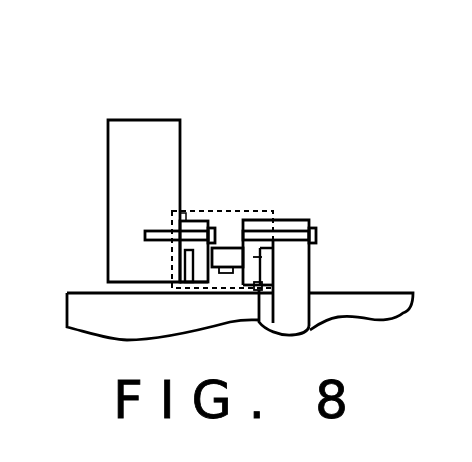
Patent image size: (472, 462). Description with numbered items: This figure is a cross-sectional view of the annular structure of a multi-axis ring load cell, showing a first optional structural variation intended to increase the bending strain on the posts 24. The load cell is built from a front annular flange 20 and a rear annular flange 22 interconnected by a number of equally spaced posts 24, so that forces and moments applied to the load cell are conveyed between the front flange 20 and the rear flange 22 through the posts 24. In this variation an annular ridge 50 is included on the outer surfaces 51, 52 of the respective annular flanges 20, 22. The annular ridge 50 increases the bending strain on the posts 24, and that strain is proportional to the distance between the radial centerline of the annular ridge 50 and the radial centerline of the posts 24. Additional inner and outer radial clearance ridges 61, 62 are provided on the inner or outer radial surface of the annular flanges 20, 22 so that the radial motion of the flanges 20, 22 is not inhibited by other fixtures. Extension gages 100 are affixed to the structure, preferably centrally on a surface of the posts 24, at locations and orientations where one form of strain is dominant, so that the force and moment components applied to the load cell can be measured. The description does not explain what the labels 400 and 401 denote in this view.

The front annular flange 20 is at (253, 257).
The rear annular flange 22 is at (198, 262).
The posts 24 is at (228, 228).
The annular ridge 50 is at (181, 224).
The outer surface 51 is at (265, 259).
The outer surface 52 is at (187, 277).
The inner radial clearance ridge 61 is at (276, 326).
The outer radial clearance ridge 62 is at (184, 213).
The extension gages 100 is at (228, 278).
The first holder unit 400 is at (197, 221).
The second holder unit 401 is at (261, 220).